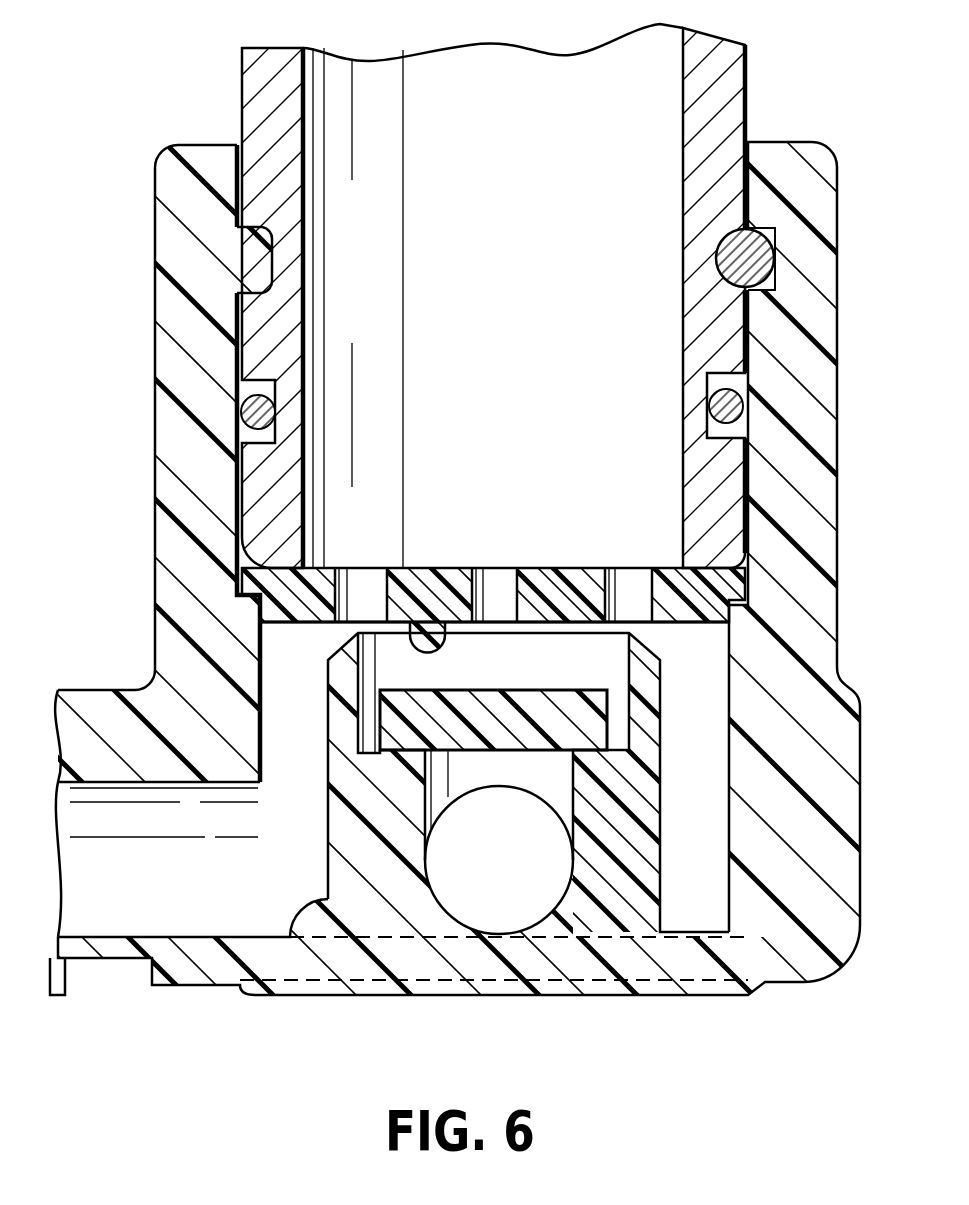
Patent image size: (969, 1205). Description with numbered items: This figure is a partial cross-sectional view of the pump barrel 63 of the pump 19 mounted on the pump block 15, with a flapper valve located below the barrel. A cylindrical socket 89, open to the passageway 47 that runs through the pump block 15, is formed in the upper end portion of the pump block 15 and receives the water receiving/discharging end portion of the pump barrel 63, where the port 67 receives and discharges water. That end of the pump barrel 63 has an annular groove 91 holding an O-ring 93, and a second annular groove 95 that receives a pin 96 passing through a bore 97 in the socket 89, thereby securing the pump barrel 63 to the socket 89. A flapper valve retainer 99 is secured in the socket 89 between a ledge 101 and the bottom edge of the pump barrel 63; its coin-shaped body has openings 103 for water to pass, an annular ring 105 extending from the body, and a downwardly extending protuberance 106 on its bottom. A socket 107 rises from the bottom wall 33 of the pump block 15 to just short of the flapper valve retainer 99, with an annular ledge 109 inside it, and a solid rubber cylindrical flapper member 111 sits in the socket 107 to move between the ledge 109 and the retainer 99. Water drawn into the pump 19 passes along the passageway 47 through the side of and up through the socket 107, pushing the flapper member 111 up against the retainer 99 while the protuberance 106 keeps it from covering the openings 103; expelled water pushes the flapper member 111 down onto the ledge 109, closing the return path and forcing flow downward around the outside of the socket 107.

The pump block 15 is at (484, 602).
The pump 19 is at (484, 602).
The bottom wall 33 is at (700, 955).
The passageway 47 is at (182, 878).
The pump barrel 63 is at (292, 158).
The port 67 is at (484, 602).
The cylindrical socket 89 is at (180, 356).
The annular groove 91 is at (245, 455).
The O-ring 93 is at (245, 410).
The second annular groove 95 is at (252, 262).
The pin 96 is at (775, 250).
The bore 97 is at (748, 238).
The flapper valve retainer 99 is at (427, 578).
The ledge 101 is at (235, 600).
The openings 103 is at (365, 590).
The annular ring 105 is at (748, 555).
The protuberance 106 is at (437, 640).
The socket 107 is at (650, 718).
The annular ledge 109 is at (395, 755).
The flapper member 111 is at (543, 702).